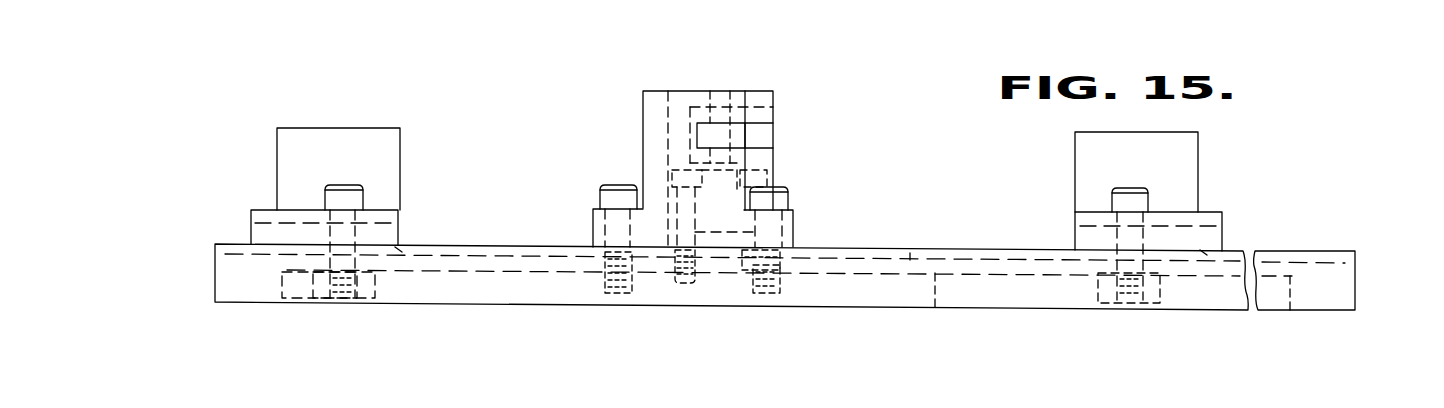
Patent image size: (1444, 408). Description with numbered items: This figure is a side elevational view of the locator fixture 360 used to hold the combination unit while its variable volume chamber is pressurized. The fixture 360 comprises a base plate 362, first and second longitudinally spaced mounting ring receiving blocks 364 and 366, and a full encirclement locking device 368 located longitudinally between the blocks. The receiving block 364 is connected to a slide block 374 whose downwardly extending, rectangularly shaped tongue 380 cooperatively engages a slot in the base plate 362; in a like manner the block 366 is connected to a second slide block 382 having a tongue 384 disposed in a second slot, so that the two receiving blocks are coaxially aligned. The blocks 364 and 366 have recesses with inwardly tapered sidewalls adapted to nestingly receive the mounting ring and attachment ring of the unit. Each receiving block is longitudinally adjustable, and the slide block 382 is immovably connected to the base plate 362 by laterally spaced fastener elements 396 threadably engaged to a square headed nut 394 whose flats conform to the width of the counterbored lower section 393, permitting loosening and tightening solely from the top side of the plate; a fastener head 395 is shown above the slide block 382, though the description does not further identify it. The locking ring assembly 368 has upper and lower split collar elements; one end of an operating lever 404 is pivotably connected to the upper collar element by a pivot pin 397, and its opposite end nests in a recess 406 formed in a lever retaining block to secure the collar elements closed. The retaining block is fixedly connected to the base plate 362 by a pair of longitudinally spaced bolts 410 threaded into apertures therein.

The locator fixture 360 is at (889, 209).
The base plate 362 is at (868, 217).
The first mounting ring receiving block 364 is at (320, 127).
The second mounting ring receiving block 366 is at (1175, 129).
The full encirclement locking device 368 is at (643, 100).
The slide block 374 is at (252, 210).
The tongue 380 is at (398, 250).
The second slide block 382 is at (1223, 212).
The tongue 384 is at (1203, 253).
The counterbored lower section 393 is at (1290, 288).
The square headed nut 394 is at (1158, 293).
The bolt head 395 is at (1130, 197).
The fastener element 396 is at (773, 163).
The pivot pin 397 is at (715, 102).
The operating lever 404 is at (718, 130).
The recess 406 is at (739, 132).
The bolts 410 is at (773, 278).